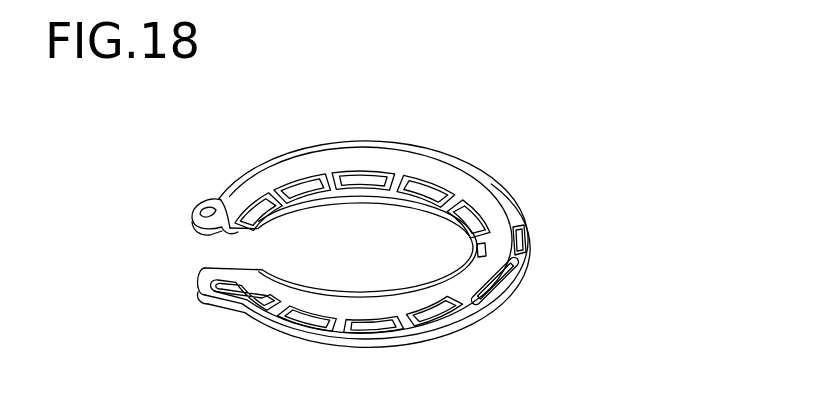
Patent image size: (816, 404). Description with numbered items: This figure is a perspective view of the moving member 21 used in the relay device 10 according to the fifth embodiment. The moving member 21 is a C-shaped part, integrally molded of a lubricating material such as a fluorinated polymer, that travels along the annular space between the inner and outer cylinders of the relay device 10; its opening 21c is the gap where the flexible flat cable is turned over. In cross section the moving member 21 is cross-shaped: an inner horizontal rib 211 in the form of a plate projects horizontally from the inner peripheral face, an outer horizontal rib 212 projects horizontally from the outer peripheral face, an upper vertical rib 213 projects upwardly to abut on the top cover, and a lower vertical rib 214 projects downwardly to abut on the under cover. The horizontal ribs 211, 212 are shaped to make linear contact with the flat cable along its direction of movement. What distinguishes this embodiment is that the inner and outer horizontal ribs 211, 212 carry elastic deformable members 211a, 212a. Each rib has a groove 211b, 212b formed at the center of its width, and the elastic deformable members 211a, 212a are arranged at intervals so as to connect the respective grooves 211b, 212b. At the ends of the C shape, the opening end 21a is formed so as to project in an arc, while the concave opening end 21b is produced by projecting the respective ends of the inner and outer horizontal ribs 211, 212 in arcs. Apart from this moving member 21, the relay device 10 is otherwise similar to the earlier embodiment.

The relay device 10 is at (362, 201).
The moving member 21 is at (359, 201).
The opening end 21a is at (200, 272).
The concave opening end 21b is at (218, 234).
The opening 21c is at (203, 262).
The inner horizontal rib 211 is at (357, 190).
The elastic deformable member 211a is at (270, 191).
The groove 211b is at (262, 214).
The outer horizontal rib 212 is at (205, 198).
The elastic deformable member 212a is at (523, 272).
The groove 212b is at (520, 243).
The upper vertical rib 213 is at (334, 148).
The lower vertical rib 214 is at (418, 206).